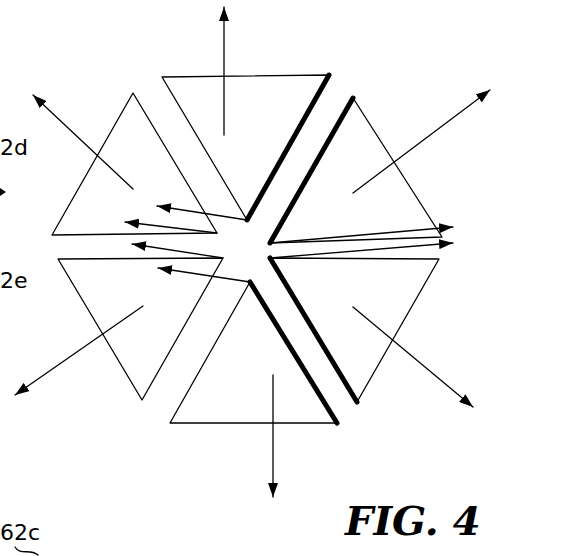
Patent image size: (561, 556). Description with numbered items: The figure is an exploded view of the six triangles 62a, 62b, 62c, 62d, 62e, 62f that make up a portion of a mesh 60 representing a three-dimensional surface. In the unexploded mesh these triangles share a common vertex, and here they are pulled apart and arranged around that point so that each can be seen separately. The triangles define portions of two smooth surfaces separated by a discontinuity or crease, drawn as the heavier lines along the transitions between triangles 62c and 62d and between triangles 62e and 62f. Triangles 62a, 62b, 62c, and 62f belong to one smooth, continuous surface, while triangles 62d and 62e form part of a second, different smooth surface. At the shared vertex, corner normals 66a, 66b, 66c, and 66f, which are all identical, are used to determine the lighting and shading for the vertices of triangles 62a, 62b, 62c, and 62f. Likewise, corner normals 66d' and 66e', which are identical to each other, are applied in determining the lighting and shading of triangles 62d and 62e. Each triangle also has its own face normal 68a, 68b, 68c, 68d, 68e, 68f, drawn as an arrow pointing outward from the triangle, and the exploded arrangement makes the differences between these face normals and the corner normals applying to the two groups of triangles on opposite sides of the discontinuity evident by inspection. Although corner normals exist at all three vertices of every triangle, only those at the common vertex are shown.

The mesh 60 is at (110, 436).
The triangle 62a is at (80, 298).
The triangle 62b is at (77, 188).
The triangle 62c is at (215, 76).
The triangle 62d is at (416, 197).
The triangle 62e is at (407, 315).
The triangle 62f is at (305, 425).
The corner normal 66a is at (154, 248).
The corner normal 66b is at (146, 222).
The corner normal 66c is at (176, 204).
The corner normal 66d' is at (361, 218).
The corner normal 66e' is at (361, 265).
The corner normal 66f is at (199, 274).
The face normal 68a is at (44, 379).
The face normal 68b is at (58, 110).
The face normal 68c is at (226, 32).
The face normal 68d is at (460, 114).
The face normal 68e is at (445, 385).
The face normal 68f is at (272, 464).